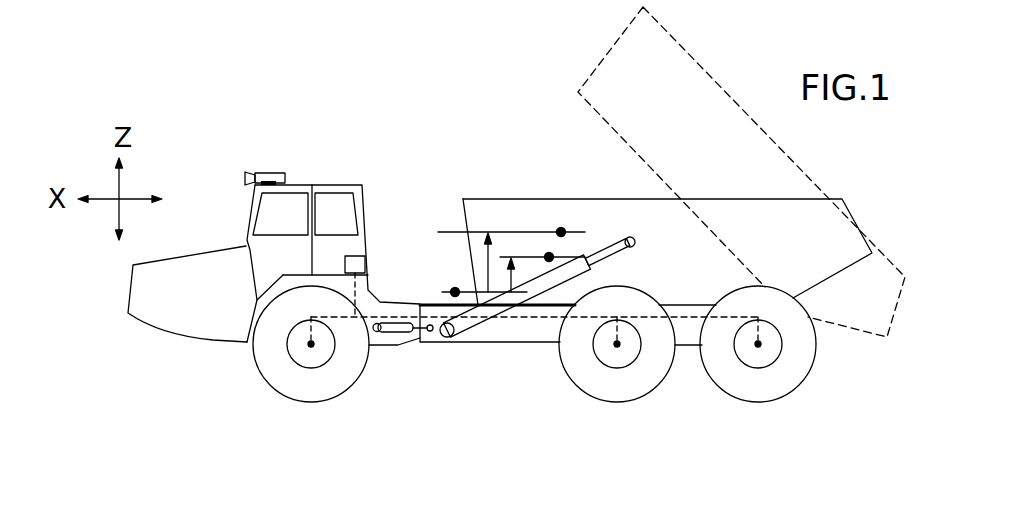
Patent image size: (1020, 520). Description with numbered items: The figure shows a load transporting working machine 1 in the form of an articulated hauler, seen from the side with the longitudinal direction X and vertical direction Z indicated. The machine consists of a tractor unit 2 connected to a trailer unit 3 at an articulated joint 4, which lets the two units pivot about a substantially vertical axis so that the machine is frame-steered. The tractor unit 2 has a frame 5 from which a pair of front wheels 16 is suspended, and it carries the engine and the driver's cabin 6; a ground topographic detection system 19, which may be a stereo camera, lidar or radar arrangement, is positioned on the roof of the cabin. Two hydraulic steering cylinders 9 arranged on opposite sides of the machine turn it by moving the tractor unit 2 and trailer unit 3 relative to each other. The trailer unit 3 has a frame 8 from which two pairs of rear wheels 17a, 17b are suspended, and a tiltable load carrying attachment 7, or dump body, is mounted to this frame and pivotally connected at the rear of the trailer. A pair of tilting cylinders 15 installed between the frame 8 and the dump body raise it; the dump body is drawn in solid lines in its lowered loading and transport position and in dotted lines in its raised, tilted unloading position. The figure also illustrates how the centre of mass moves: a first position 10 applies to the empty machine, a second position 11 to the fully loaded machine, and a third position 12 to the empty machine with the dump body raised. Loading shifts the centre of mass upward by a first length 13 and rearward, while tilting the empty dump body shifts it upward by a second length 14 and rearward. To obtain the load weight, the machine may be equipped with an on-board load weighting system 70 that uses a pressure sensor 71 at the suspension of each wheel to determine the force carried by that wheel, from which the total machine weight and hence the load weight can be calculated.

The working machine 1 is at (315, 100).
The tractor unit 2 is at (172, 350).
The trailer unit 3 is at (857, 370).
The articulated joint 4 is at (413, 340).
The frame 5 is at (227, 322).
The driver's cabin 6 is at (270, 263).
The load carrying attachment 7 is at (667, 223).
The frame 8 is at (693, 345).
The hydraulic steering cylinders 9 is at (390, 330).
The first position of the centre of mass 10 is at (455, 292).
The second position of the centre of mass 11 is at (549, 257).
The third position of the centre of mass 12 is at (561, 232).
The first length 13 is at (512, 270).
The second length 14 is at (488, 253).
The tilting cylinders 15 is at (548, 282).
The front wheels 16 is at (272, 362).
The rear wheels 17a is at (655, 362).
The rear wheels 17b is at (760, 382).
The ground topographic detection system 19 is at (264, 177).
The on-board load weighting system 70 is at (357, 265).
The pressure sensor 71 is at (313, 344).